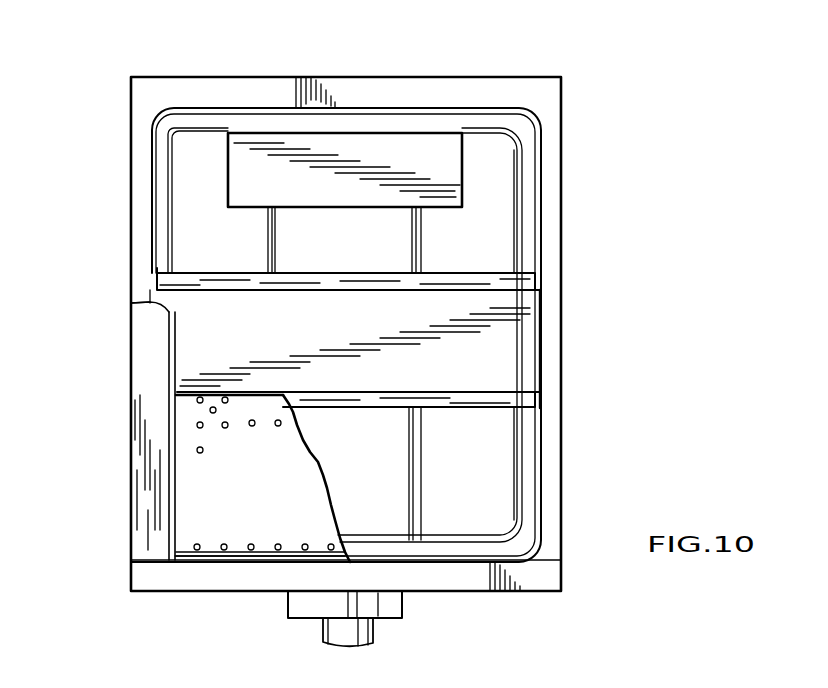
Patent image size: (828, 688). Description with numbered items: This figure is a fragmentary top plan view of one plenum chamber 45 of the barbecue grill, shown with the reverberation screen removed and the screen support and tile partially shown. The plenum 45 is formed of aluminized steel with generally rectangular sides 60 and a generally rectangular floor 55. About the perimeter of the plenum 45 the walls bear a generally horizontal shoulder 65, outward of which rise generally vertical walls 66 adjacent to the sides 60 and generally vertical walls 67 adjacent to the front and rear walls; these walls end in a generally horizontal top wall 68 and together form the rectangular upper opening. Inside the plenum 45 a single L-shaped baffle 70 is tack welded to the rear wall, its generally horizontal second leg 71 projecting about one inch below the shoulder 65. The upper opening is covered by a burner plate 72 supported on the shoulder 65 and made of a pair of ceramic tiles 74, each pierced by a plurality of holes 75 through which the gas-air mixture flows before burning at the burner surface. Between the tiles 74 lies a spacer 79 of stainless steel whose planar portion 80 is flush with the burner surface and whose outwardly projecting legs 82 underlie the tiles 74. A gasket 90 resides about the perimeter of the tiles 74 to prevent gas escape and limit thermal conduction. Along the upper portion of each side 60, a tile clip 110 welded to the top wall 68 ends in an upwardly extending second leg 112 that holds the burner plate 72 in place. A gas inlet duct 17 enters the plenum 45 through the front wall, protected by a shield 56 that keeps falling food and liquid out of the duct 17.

The plenum chamber 45 is at (562, 117).
The top wall 68 is at (219, 88).
The shoulder 65 is at (158, 203).
The vertical wall 67 is at (472, 120).
The vertical wall 66 is at (540, 232).
The second leg 71 is at (434, 168).
The baffle 70 is at (462, 180).
The side 60 is at (235, 252).
The floor 55 is at (359, 252).
The leg 82 is at (489, 272).
The planar portion 80 is at (474, 356).
The spacer 79 is at (540, 316).
The tile clip 110 is at (142, 348).
The second leg 112 is at (177, 332).
The gasket 90 is at (283, 395).
The tile 74 is at (235, 521).
The hole 75 is at (252, 427).
The burner plate 72 is at (210, 552).
The shield 56 is at (402, 608).
The gas inlet duct 17 is at (373, 635).